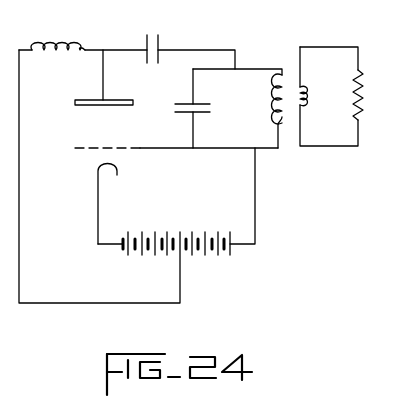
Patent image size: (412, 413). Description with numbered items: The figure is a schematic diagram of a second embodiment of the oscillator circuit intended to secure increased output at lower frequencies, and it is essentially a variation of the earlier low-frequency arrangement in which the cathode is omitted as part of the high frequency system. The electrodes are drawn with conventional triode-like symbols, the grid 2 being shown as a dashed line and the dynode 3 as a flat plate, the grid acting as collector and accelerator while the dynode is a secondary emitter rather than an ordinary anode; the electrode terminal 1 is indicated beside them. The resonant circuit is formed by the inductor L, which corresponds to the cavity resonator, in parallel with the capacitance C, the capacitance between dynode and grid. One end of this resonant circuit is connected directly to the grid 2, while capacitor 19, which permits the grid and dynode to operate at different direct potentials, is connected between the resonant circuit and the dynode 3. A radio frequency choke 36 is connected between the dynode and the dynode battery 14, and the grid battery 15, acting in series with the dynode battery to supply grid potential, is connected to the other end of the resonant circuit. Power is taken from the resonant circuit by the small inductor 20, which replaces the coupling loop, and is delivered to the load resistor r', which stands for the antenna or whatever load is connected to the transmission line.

The radio frequency choke 36 is at (81, 38).
The capacitor 19 is at (164, 29).
The dynode 3 is at (75, 103).
The capacitance C is at (181, 109).
The inductor L is at (283, 56).
The small inductor 20 is at (304, 94).
The load resistor r' is at (348, 95).
The grid 2 is at (76, 148).
The electrode terminal 1 is at (97, 163).
The dynode battery 14 is at (160, 254).
The grid battery 15 is at (195, 255).